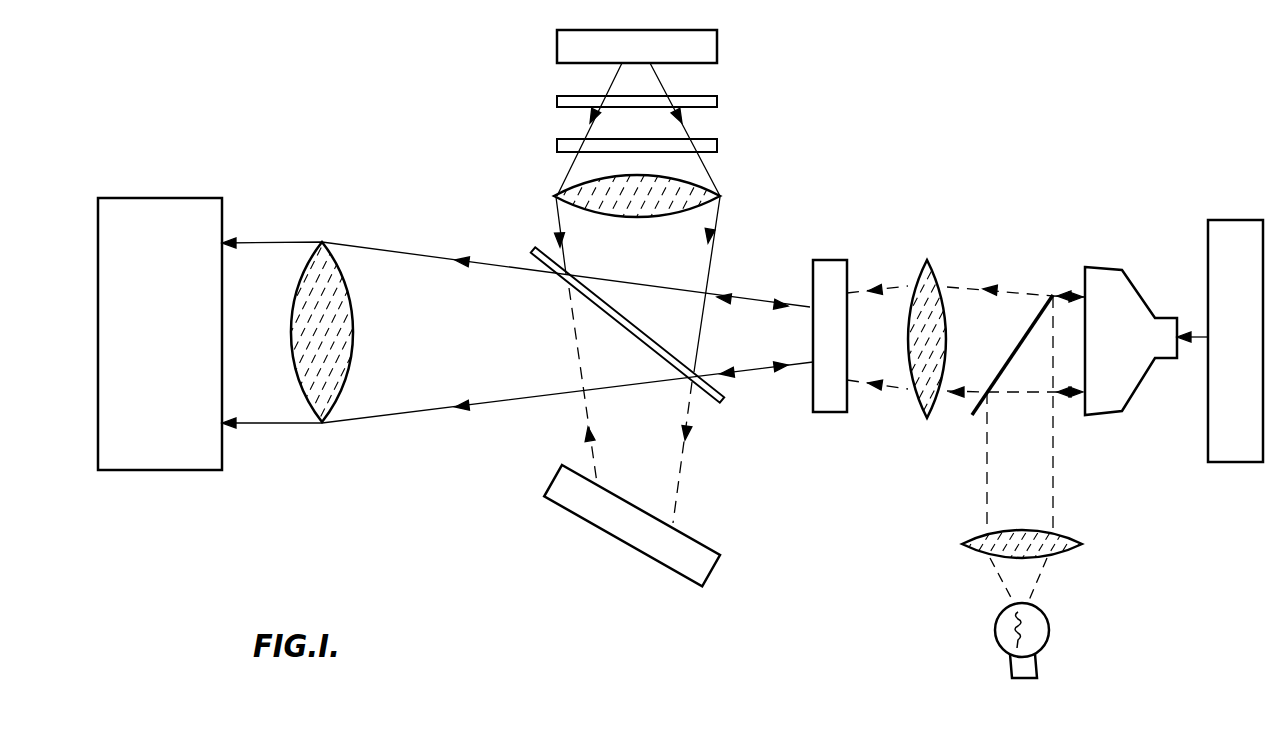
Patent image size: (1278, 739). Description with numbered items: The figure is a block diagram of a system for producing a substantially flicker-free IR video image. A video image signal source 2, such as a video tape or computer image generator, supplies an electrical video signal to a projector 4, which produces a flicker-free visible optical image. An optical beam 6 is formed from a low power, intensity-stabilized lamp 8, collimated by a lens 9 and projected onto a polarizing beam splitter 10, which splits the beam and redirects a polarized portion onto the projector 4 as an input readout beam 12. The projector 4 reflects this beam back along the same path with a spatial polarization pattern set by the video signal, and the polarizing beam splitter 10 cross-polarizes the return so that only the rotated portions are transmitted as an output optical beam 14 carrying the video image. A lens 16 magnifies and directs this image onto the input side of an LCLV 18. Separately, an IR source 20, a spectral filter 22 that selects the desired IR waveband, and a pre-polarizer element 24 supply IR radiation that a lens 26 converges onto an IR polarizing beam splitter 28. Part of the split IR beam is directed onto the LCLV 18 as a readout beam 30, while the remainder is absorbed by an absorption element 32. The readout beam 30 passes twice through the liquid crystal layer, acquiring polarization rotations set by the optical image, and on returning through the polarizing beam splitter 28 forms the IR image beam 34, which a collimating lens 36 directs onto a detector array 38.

The video image signal source 2 is at (1225, 220).
The projector 4 is at (1112, 267).
The optical beam 6 is at (987, 465).
The lamp 8 is at (1049, 625).
The lens 9 is at (965, 548).
The polarizing beam splitter 10 is at (1053, 293).
The input readout beam 12 is at (1068, 396).
The output optical beam 14 is at (960, 283).
The lens 16 is at (918, 265).
The LCLV 18 is at (825, 260).
The IR source 20 is at (557, 44).
The spectral filter 22 is at (557, 101).
The pre-polarizer element 24 is at (557, 146).
The lens 26 is at (553, 194).
The IR polarizing beam splitter 28 is at (722, 405).
The readout beam 30 is at (755, 300).
The absorption element 32 is at (553, 500).
The IR image beam 34 is at (397, 250).
The collimating lens 36 is at (353, 348).
The detector array 38 is at (158, 198).